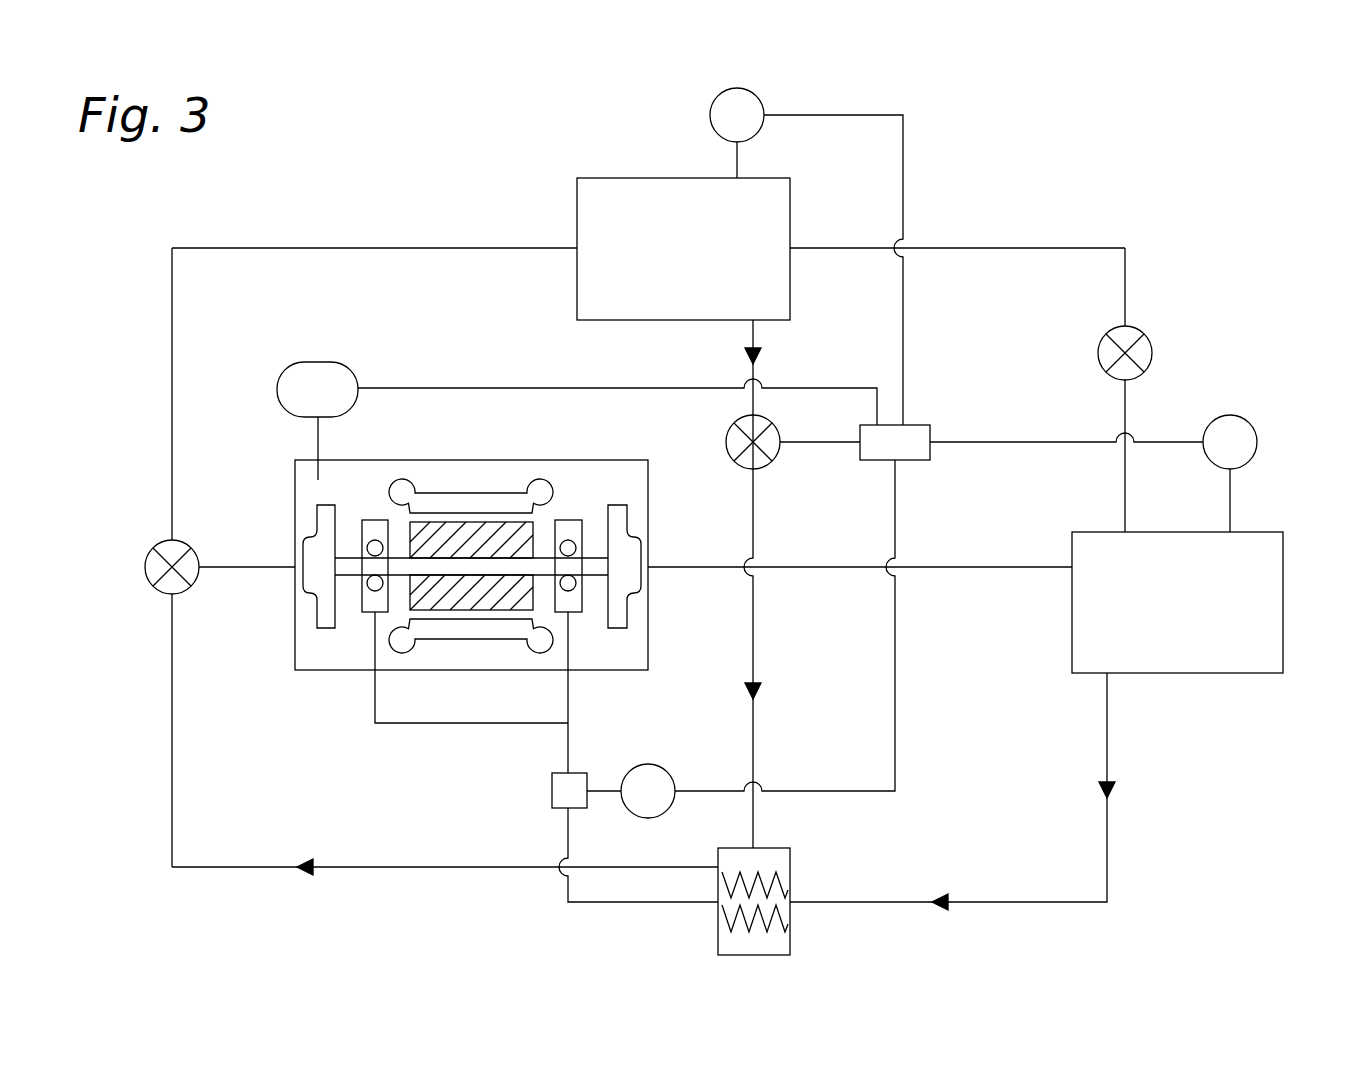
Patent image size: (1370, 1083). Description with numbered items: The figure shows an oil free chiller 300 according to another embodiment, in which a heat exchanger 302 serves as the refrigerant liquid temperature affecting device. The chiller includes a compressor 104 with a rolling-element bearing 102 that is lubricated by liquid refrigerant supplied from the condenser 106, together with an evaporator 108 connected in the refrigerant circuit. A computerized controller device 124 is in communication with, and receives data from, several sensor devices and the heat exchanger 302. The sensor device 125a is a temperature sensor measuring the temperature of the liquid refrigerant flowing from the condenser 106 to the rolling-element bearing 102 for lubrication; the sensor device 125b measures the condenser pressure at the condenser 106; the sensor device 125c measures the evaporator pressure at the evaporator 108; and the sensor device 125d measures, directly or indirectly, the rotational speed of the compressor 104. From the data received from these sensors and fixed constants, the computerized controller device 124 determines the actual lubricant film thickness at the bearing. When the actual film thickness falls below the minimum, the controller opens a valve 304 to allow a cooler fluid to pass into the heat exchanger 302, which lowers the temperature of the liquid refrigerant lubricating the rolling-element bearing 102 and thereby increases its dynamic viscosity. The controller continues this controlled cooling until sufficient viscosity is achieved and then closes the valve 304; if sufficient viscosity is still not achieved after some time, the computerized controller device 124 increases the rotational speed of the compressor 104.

The oil free chiller 300 is at (1248, 170).
The evaporator 108 is at (577, 192).
The sensor device 125c is at (712, 130).
The sensor device 125d is at (315, 362).
The compressor 104 is at (434, 536).
The rolling-element bearing 102 is at (372, 520).
The valve 304 is at (730, 430).
The computerized controller device 124 is at (918, 425).
The sensor device 125b is at (1252, 423).
The condenser 106 is at (1257, 530).
The sensor device 125a is at (648, 763).
The heat exchanger 302 is at (717, 940).